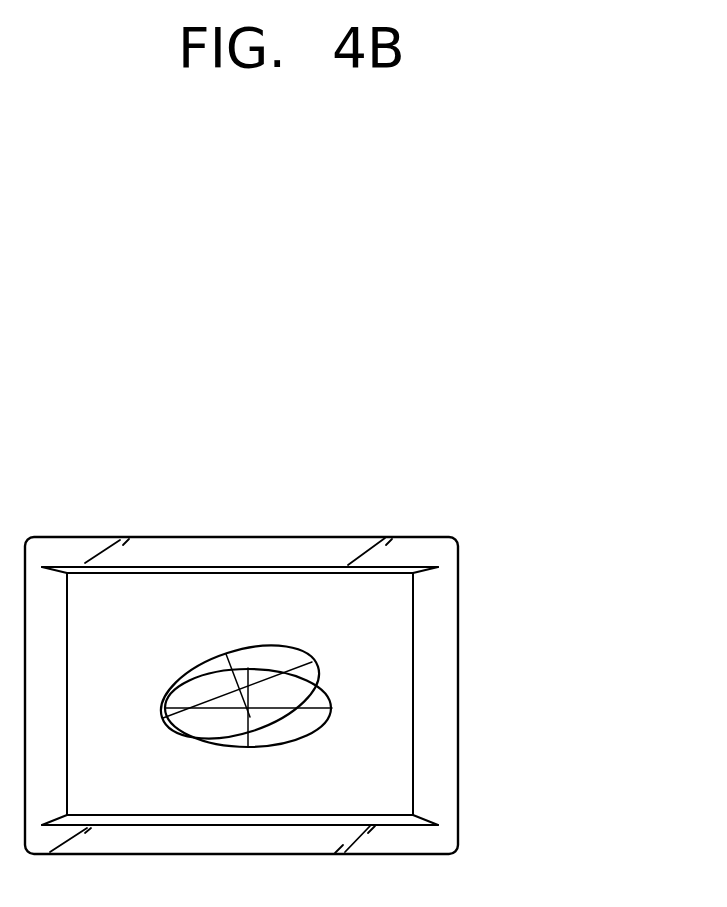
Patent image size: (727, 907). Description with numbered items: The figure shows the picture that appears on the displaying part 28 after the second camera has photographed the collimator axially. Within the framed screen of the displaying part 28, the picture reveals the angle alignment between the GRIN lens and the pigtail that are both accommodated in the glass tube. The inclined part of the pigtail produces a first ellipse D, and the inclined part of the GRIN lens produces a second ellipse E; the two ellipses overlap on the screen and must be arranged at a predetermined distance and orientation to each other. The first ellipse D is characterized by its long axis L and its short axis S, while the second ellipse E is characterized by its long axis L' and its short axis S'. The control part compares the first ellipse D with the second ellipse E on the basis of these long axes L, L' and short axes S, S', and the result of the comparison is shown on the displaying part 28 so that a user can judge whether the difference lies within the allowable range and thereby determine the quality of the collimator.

The displaying part 28 is at (452, 521).
The first ellipse D is at (183, 673).
The short axis of the first ellipse S is at (239, 651).
The long axis of the first ellipse L is at (239, 670).
The second ellipse E is at (213, 747).
The short axis of the second ellipse S' is at (259, 739).
The long axis of the second ellipse L' is at (248, 736).